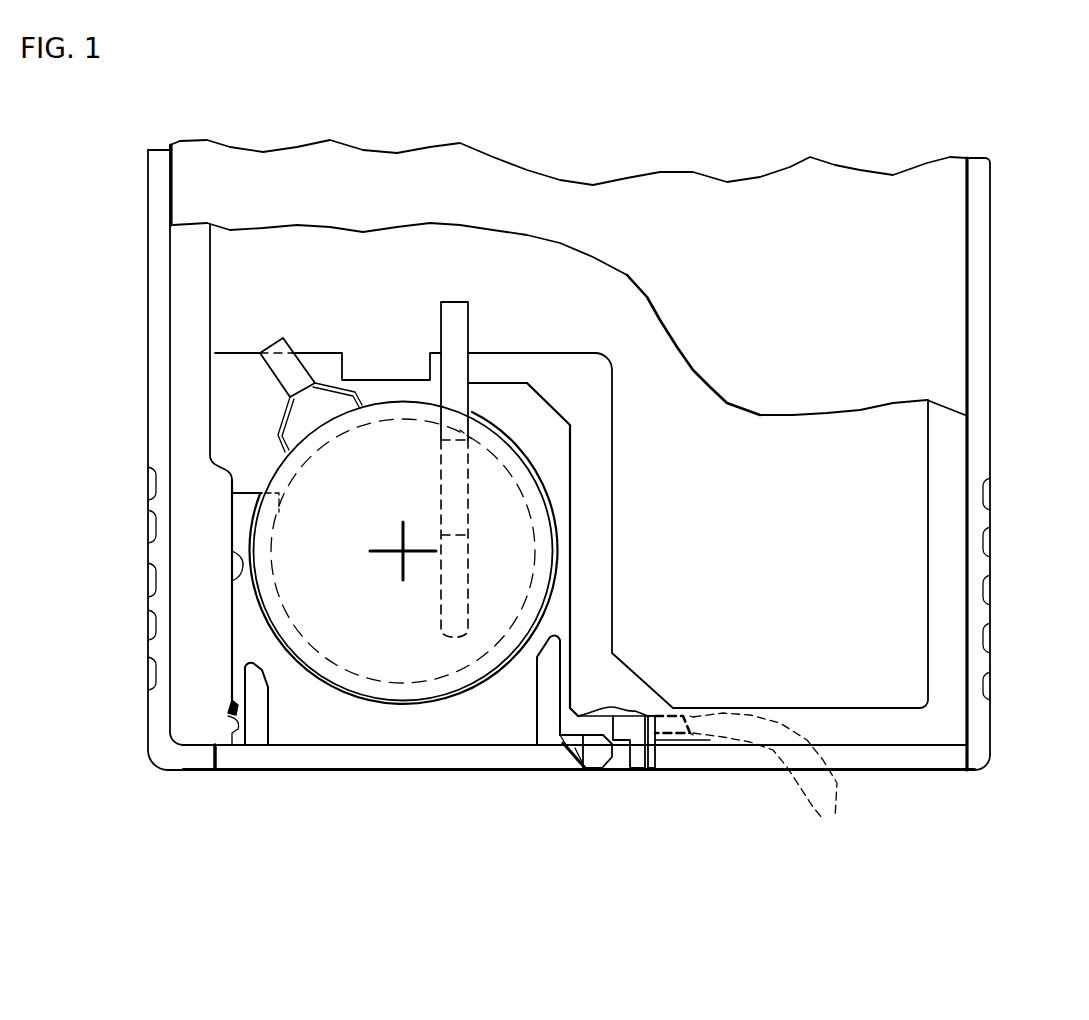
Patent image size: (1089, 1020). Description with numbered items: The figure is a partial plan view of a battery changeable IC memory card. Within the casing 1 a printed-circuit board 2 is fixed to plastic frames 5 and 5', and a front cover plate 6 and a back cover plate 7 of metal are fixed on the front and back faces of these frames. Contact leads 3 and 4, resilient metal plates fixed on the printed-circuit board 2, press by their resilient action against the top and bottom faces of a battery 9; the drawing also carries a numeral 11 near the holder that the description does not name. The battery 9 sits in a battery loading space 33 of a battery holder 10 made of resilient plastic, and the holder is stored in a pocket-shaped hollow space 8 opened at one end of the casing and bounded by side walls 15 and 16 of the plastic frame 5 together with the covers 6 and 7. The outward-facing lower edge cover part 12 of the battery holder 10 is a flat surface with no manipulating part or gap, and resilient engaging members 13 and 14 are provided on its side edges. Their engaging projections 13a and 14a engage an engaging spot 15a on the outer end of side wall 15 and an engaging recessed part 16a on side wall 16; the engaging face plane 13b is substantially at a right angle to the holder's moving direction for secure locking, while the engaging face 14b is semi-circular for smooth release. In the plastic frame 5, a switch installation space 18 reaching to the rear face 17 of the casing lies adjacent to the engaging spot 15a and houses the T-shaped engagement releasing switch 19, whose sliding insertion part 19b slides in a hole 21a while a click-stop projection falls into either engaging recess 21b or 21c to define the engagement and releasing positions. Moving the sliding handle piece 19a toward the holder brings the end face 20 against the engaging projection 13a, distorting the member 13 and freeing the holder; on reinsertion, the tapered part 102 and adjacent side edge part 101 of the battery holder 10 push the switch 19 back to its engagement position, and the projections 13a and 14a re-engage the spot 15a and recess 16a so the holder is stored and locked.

The casing 1 is at (618, 455).
The printed-circuit board 2 is at (569, 242).
The contact lead 3 is at (220, 374).
The contact lead 4 is at (465, 353).
The plastic frame 5 is at (596, 490).
The plastic frame 5' is at (155, 312).
The front cover plate 6 is at (573, 127).
The back cover plate 7 is at (155, 518).
The pocket-shaped hollow space 8 is at (328, 534).
The battery 9 is at (403, 385).
The battery holder 10 is at (160, 578).
The holder contact portion 11 is at (541, 254).
The lower edge cover part 12 is at (579, 828).
The resilient engaging member 13 is at (444, 743).
The engaging projection 13a is at (507, 796).
The engaging face plane 13b is at (523, 807).
The resilient engaging member 14 is at (167, 675).
The engaging projection 14a is at (142, 753).
The engaging face 14b is at (141, 729).
The side wall 15 is at (765, 530).
The engaging spot 15a is at (505, 817).
The side wall 16 is at (156, 513).
The engaging recessed part 16a is at (148, 779).
The rear face 17 is at (681, 783).
The switch installation space 18 is at (626, 798).
The engagement releasing switch 19 is at (718, 783).
The sliding handle piece 19a is at (674, 810).
The sliding insertion part 19b is at (779, 781).
The end face 20 is at (572, 797).
The hole 21a is at (790, 765).
The engaging recess 21b is at (747, 775).
The engaging recess 21c is at (606, 772).
The battery loading space 33 is at (171, 461).
The side edge part 101 is at (826, 554).
The tapered part 102 is at (603, 247).